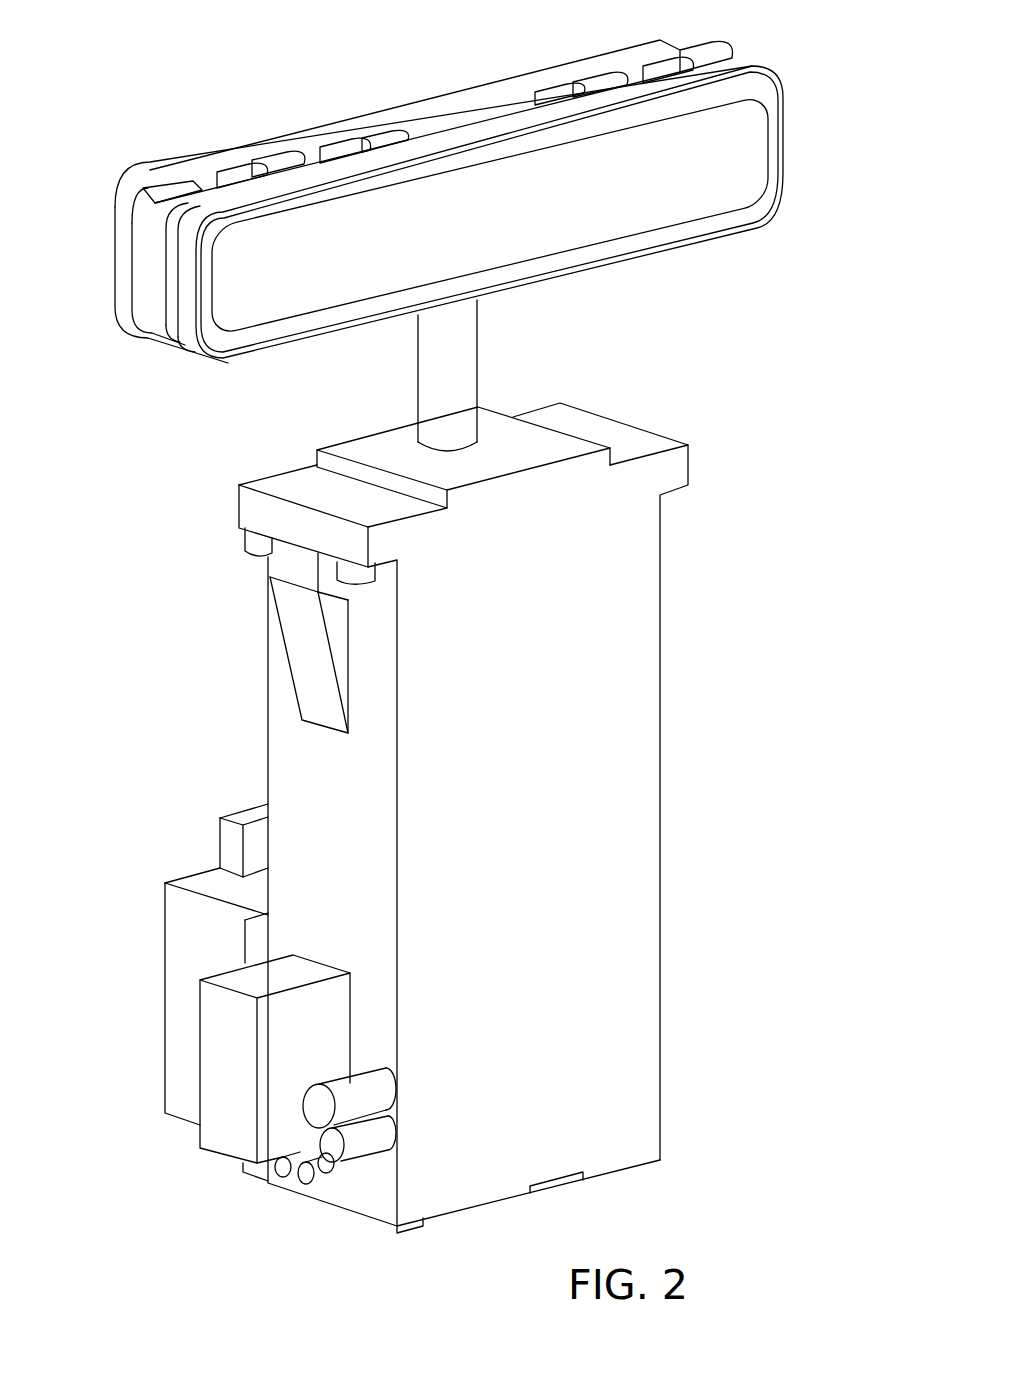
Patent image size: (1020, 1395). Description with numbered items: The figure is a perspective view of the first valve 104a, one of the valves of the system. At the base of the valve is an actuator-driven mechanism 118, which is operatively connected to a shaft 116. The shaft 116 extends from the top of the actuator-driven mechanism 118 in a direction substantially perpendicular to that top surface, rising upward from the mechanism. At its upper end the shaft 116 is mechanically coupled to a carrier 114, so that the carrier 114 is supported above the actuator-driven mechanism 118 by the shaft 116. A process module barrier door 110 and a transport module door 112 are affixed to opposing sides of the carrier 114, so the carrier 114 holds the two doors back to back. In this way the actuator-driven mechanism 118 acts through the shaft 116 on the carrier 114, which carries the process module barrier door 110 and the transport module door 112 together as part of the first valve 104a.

The first valve 104a is at (168, 720).
The process module barrier door 110 is at (752, 146).
The transport module door 112 is at (214, 160).
The carrier 114 is at (145, 275).
The shaft 116 is at (468, 343).
The actuator-driven mechanism 118 is at (623, 667).